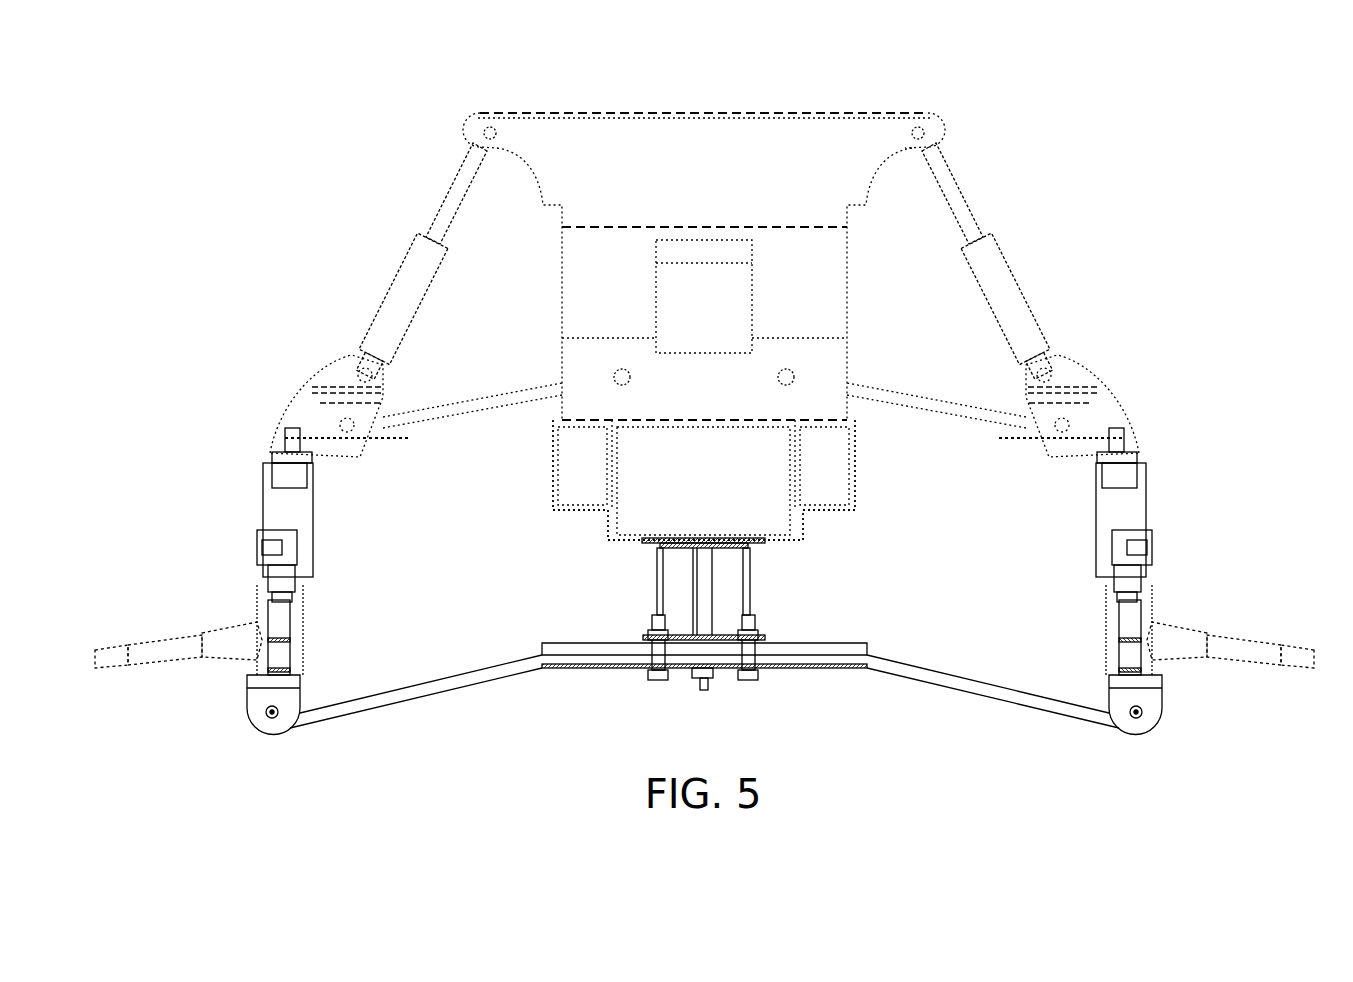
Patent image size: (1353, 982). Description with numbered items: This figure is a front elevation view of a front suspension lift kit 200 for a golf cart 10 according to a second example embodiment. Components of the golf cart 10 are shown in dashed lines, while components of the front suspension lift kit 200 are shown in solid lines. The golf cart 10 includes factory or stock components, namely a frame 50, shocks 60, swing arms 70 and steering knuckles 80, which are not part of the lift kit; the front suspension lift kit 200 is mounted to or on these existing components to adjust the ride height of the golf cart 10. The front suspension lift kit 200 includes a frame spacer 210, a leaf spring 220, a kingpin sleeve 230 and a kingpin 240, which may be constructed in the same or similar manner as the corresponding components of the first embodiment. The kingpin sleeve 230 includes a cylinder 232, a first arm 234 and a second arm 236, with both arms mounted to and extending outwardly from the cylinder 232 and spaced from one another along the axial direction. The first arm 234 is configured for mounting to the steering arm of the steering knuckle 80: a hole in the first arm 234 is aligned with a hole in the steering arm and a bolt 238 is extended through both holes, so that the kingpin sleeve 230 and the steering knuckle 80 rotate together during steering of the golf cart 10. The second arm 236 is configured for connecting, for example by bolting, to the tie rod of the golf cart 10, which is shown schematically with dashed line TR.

The golf cart 10 is at (945, 103).
The front suspension lift kit 200 is at (268, 212).
The frame 50 is at (800, 538).
The shocks 60 is at (432, 215).
The swing arms 70 is at (463, 400).
The tie rod TR is at (332, 437).
The steering knuckles 80 is at (162, 635).
The frame spacer 210 is at (658, 578).
The leaf spring 220 is at (613, 662).
The kingpin sleeve 230 is at (689, 551).
The cylinder 232 is at (262, 512).
The first arm 234 is at (257, 555).
The second arm 236 is at (295, 477).
The bolt 238 is at (277, 582).
The kingpin 240 is at (280, 628).